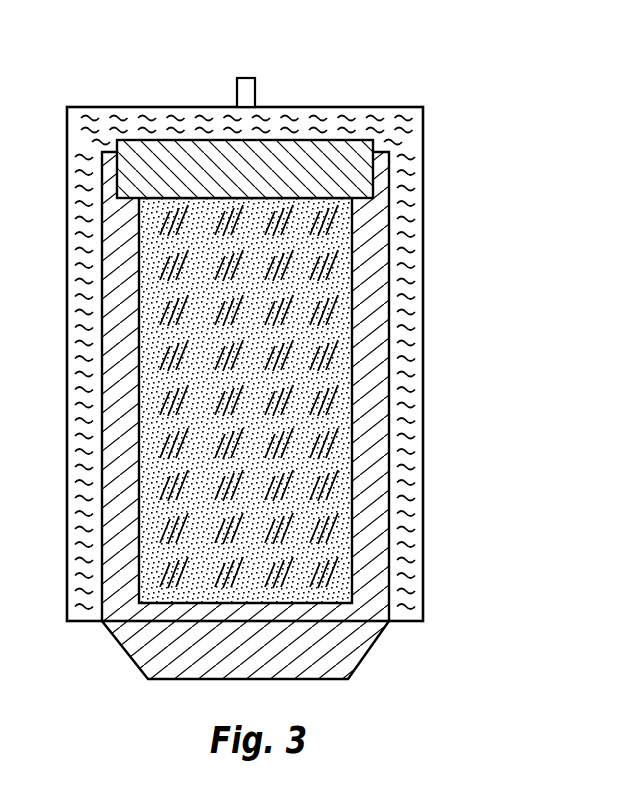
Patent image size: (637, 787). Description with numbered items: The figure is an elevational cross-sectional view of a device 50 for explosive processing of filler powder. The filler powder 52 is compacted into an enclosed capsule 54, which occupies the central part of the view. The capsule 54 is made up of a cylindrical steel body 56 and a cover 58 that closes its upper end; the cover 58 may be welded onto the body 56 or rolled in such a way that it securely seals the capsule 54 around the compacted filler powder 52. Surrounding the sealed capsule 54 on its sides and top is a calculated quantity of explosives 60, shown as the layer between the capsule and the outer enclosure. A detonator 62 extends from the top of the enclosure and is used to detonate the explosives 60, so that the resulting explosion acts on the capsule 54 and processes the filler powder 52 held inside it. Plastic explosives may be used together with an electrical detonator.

The device for explosive processing of filler powder 50 is at (321, 348).
The filler powder 52 is at (333, 397).
The capsule 54 is at (355, 645).
The cylindrical steel body 56 is at (375, 233).
The cover 58 is at (300, 146).
The explosives 60 is at (410, 147).
The detonator 62 is at (245, 86).